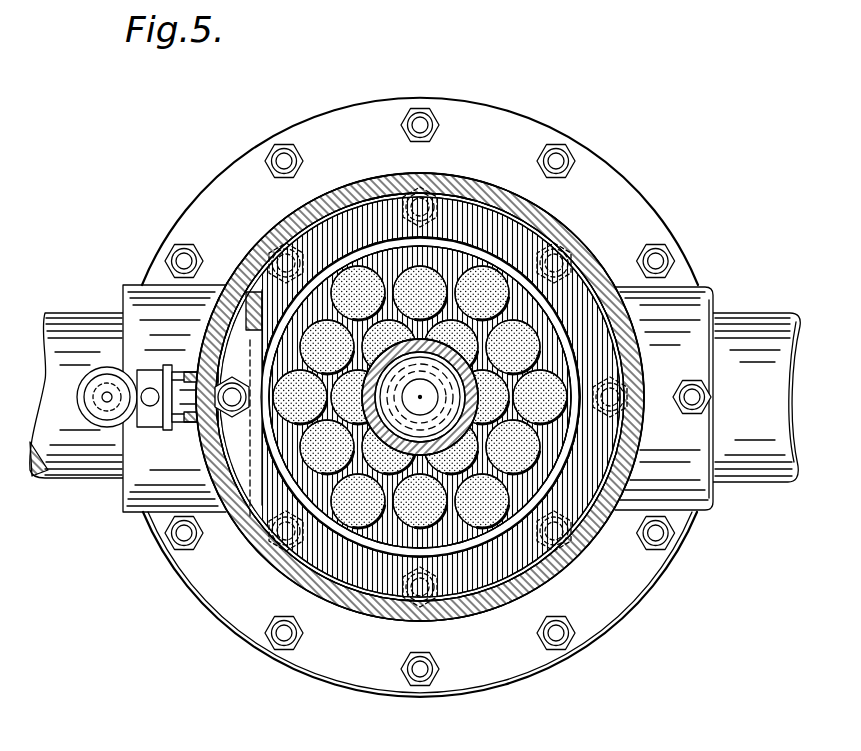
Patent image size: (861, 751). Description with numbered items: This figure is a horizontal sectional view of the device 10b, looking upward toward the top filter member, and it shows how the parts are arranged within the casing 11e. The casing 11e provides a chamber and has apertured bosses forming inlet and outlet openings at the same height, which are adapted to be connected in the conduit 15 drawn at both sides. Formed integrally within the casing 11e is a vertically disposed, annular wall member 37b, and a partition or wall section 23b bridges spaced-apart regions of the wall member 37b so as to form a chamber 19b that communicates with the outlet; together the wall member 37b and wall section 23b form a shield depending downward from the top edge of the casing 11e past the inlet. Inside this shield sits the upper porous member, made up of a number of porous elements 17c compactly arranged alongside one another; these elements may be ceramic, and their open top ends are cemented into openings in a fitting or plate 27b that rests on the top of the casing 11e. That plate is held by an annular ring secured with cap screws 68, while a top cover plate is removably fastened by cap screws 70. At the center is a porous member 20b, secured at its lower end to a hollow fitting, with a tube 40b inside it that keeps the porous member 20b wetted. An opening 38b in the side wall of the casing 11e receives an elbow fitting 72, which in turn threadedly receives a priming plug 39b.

The device 10b is at (592, 135).
The cap screws 70 is at (405, 120).
The cap screws 68 is at (549, 260).
The porous elements 17c is at (428, 272).
The fitting or plate 27b is at (533, 320).
The chamber 19b is at (235, 295).
The opening 38b is at (193, 385).
The priming plug 39b is at (100, 368).
The elbow fitting 72 is at (140, 420).
The conduit 15 is at (60, 470).
The tube 40b is at (445, 397).
The porous member 20b is at (475, 432).
The casing 11e is at (533, 553).
The wall member 37b is at (482, 553).
The partition or wall section 23b is at (268, 470).